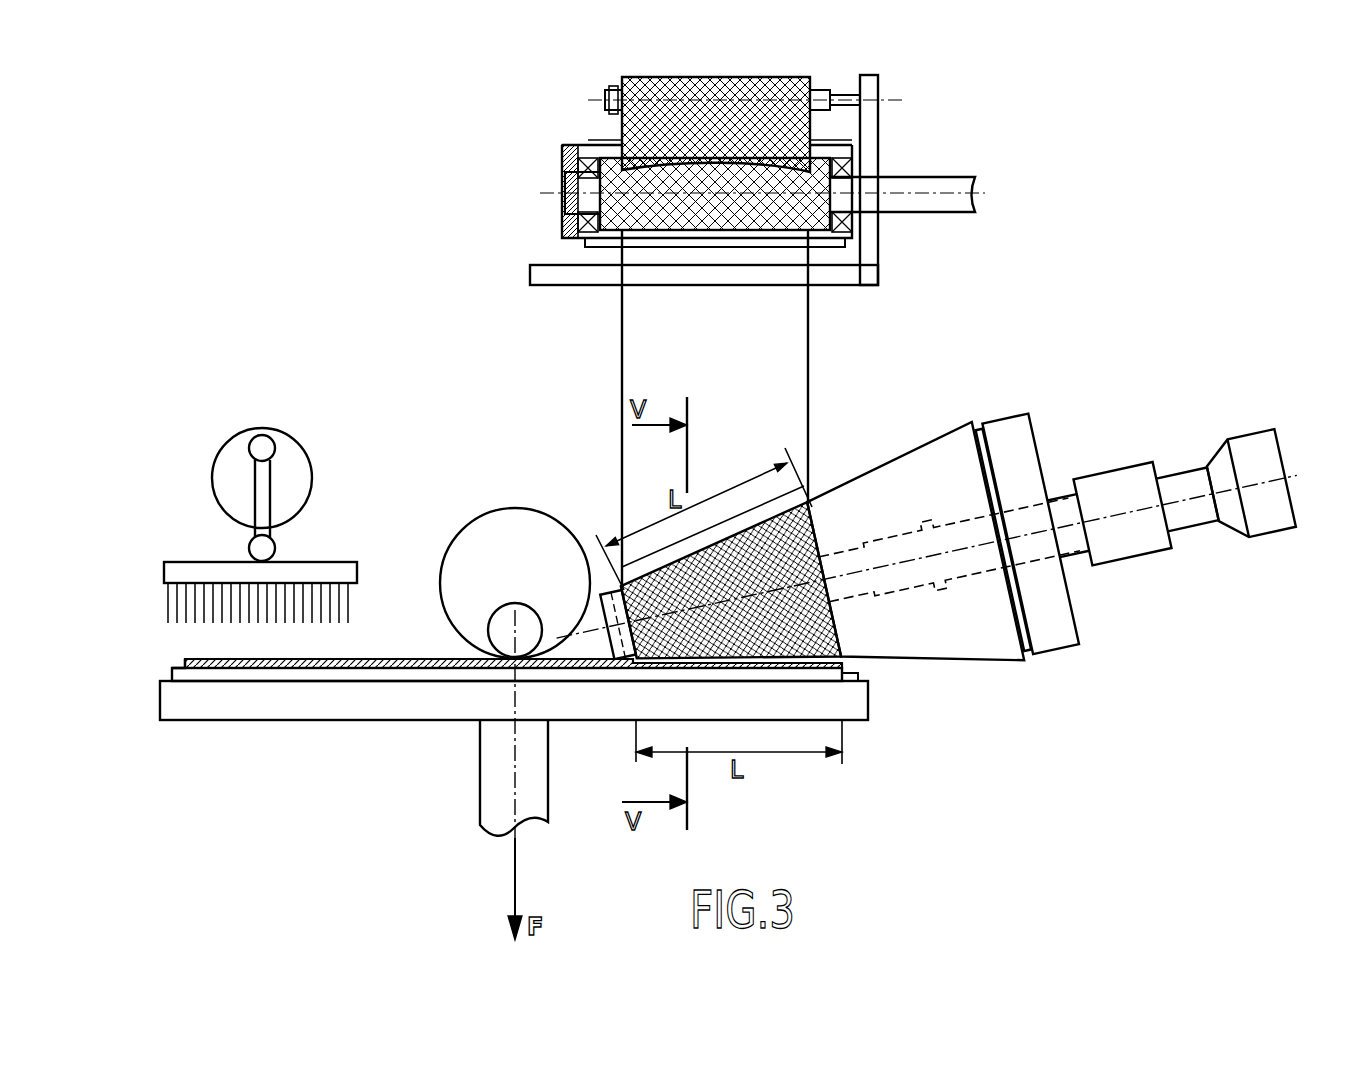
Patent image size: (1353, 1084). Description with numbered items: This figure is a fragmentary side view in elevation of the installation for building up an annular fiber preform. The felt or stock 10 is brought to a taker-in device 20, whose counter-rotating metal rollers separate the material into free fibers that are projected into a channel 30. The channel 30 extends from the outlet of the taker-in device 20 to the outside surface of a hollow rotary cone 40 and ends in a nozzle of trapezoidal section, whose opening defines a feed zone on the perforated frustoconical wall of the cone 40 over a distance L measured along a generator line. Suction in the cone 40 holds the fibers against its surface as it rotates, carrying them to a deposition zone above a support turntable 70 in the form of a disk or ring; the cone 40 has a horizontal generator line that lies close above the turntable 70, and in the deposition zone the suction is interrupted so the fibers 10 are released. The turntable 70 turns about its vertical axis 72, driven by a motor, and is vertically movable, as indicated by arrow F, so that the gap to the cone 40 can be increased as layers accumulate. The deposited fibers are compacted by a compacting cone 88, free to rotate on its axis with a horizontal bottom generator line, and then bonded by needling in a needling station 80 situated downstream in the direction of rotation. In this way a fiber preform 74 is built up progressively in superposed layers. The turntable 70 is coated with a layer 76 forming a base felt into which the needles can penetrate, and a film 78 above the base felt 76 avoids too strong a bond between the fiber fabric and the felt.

The felt or stock 10 is at (676, 67).
The taker-in device 20 is at (900, 230).
The channel 30 is at (800, 356).
The rotary cone 40 is at (919, 432).
The support turntable 70 is at (231, 706).
The vertical axis 72 is at (492, 773).
The fiber preform 74 is at (328, 670).
The layer forming a base felt 76 is at (196, 676).
The film 78 is at (180, 666).
The needling station 80 is at (178, 505).
The compacting cone 88 is at (520, 525).